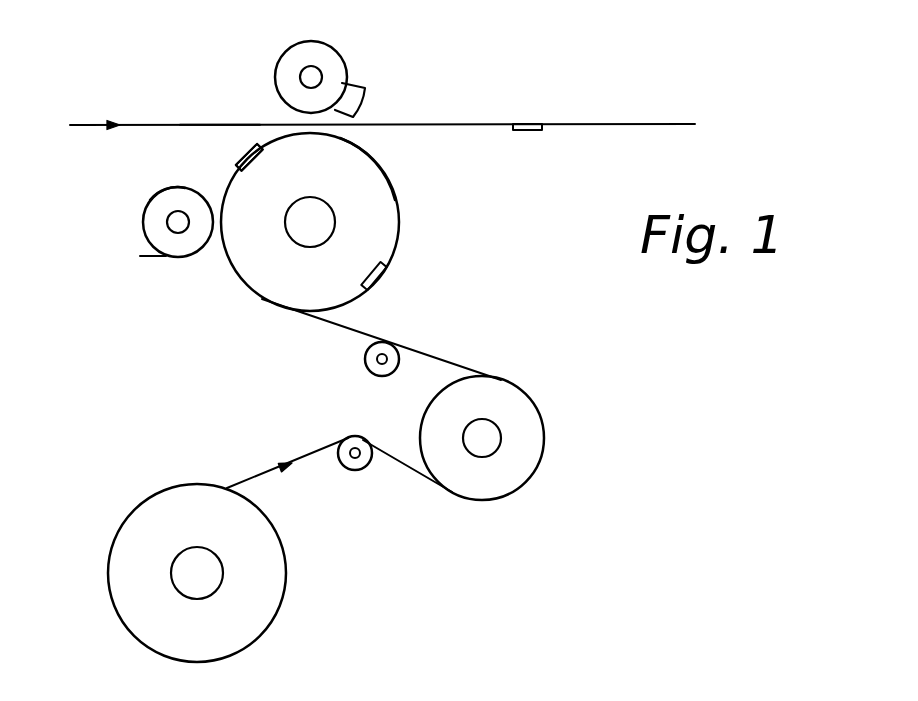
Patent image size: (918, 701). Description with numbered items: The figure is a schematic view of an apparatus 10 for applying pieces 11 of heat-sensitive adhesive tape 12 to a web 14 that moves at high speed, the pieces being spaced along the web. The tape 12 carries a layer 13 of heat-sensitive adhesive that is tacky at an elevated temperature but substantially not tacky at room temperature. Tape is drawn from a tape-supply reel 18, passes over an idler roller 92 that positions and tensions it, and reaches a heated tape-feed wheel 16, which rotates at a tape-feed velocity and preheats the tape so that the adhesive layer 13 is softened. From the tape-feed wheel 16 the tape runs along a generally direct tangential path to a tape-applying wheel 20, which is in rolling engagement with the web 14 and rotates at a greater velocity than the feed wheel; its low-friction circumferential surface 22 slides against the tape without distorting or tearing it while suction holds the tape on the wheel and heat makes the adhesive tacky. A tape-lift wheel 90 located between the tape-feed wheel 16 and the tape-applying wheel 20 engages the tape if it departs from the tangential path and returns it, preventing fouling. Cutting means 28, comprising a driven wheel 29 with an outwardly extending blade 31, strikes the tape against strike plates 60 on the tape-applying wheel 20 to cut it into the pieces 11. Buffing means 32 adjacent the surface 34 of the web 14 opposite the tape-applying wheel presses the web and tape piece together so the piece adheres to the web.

The apparatus 10 is at (530, 84).
The piece of tape 11 is at (242, 154).
The heat-sensitive adhesive tape 12 is at (452, 353).
The heat-sensitive adhesive layer 13 is at (320, 322).
The web 14 is at (627, 114).
The tape-feed wheel 16 is at (522, 456).
The tape-supply reel 18 is at (250, 612).
The tape-applying wheel 20 is at (412, 234).
The circumferential surface 22 is at (384, 168).
The cutting means 28 is at (135, 238).
The wheel 29 is at (145, 204).
The blade 31 is at (150, 257).
The buffing means 32 is at (345, 43).
The surface of the web 34 is at (215, 123).
The strike plates 60 is at (236, 170).
The tape-lift wheel 90 is at (365, 364).
The idler roller 92 is at (353, 470).